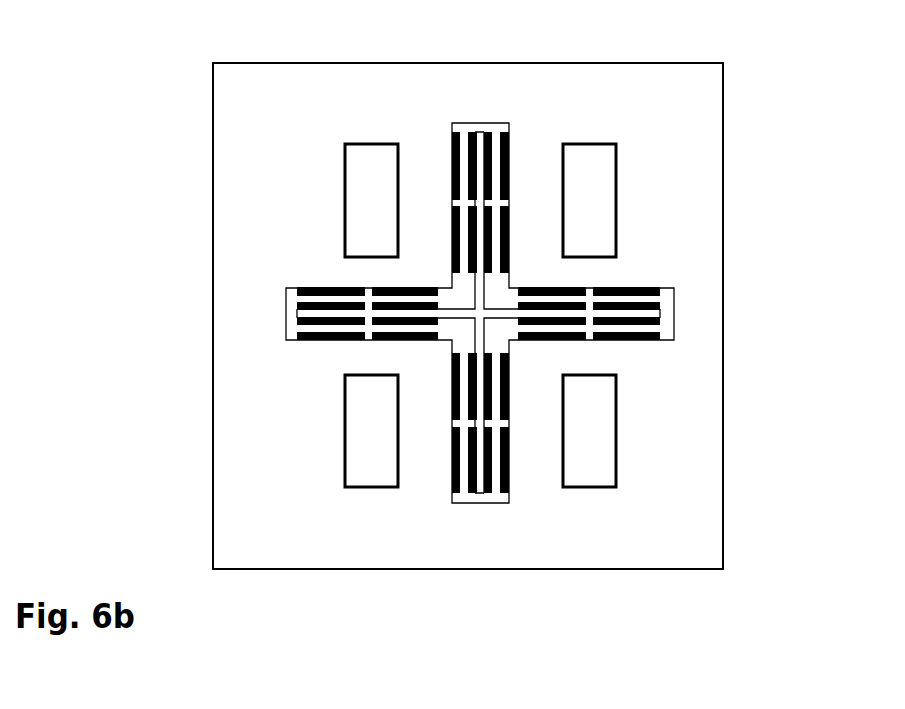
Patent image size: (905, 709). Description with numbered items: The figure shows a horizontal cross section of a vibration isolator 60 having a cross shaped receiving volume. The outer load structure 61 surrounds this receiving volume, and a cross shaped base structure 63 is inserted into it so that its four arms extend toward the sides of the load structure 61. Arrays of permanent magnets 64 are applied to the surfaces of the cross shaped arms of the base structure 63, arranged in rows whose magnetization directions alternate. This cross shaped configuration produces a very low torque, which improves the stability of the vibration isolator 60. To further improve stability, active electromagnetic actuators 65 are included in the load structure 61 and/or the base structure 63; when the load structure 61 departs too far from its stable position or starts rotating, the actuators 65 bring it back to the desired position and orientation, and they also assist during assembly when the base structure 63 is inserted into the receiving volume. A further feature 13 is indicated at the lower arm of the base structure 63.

The vibration isolator 60 is at (212, 51).
The load structure 61 is at (723, 316).
The base structure 63 is at (462, 307).
The permanent magnets 64 is at (488, 131).
The active electromagnetic actuators 65 is at (370, 487).
The electrode arm 13 is at (471, 510).